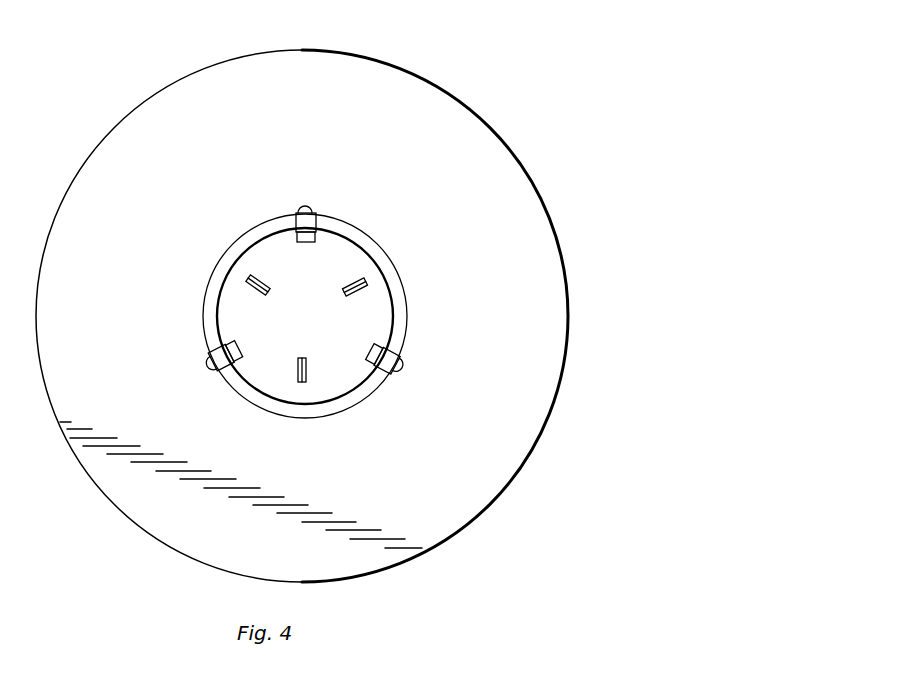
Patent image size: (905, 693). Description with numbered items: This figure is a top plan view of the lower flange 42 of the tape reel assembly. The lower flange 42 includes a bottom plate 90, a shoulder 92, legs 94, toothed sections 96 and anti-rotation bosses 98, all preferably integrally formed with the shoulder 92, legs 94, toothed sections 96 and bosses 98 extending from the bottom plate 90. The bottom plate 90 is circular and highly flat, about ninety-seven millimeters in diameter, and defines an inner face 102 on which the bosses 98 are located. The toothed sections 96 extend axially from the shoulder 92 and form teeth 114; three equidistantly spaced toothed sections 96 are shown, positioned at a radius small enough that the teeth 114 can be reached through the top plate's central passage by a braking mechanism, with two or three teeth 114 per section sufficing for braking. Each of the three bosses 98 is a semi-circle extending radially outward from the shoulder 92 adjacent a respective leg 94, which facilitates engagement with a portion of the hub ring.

The lower flange 42 is at (326, 310).
The bottom plate 90 is at (326, 316).
The shoulder 92 is at (235, 248).
The legs 94 is at (297, 235).
The toothed sections 96 is at (248, 285).
The anti-rotation bosses 98 is at (304, 205).
The inner face 102 is at (518, 185).
The teeth 114 is at (415, 252).